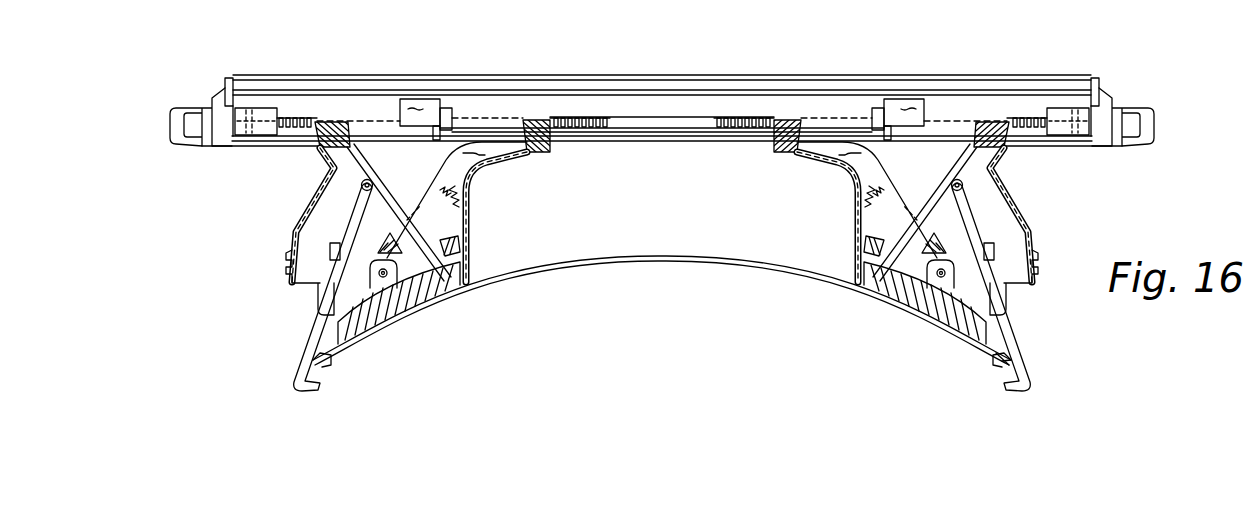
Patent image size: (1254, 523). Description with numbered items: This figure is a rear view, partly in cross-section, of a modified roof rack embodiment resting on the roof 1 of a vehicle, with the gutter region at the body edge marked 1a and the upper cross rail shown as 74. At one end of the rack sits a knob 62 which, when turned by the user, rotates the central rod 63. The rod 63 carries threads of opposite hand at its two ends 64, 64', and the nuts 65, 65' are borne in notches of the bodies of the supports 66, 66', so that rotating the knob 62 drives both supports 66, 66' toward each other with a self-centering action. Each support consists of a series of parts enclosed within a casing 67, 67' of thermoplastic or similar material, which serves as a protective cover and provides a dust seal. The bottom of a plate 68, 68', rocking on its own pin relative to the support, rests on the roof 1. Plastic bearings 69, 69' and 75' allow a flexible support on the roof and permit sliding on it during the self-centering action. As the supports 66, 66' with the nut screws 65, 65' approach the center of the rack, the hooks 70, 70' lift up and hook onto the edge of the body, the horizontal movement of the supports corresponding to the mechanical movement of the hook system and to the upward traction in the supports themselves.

The roof 1 is at (655, 262).
The rain gutter 1a is at (330, 367).
The knob 62 is at (180, 108).
The central rod 63 is at (657, 117).
The threaded end of rod 64 is at (272, 87).
The threaded end of rod 64' is at (1047, 84).
The nut 65 is at (418, 85).
The nut 65' is at (895, 85).
The support 66 is at (429, 201).
The support 66' is at (902, 201).
The casing 67 is at (374, 228).
The casing 67' is at (945, 228).
The plate 68 is at (399, 290).
The plate 68' is at (923, 295).
The plastic bearing 69 is at (423, 227).
The plastic bearing 69' is at (895, 234).
The hook 70 is at (305, 287).
The hook 70' is at (1022, 287).
The cross rail 74 is at (525, 75).
The plastic bearing 75' is at (958, 363).